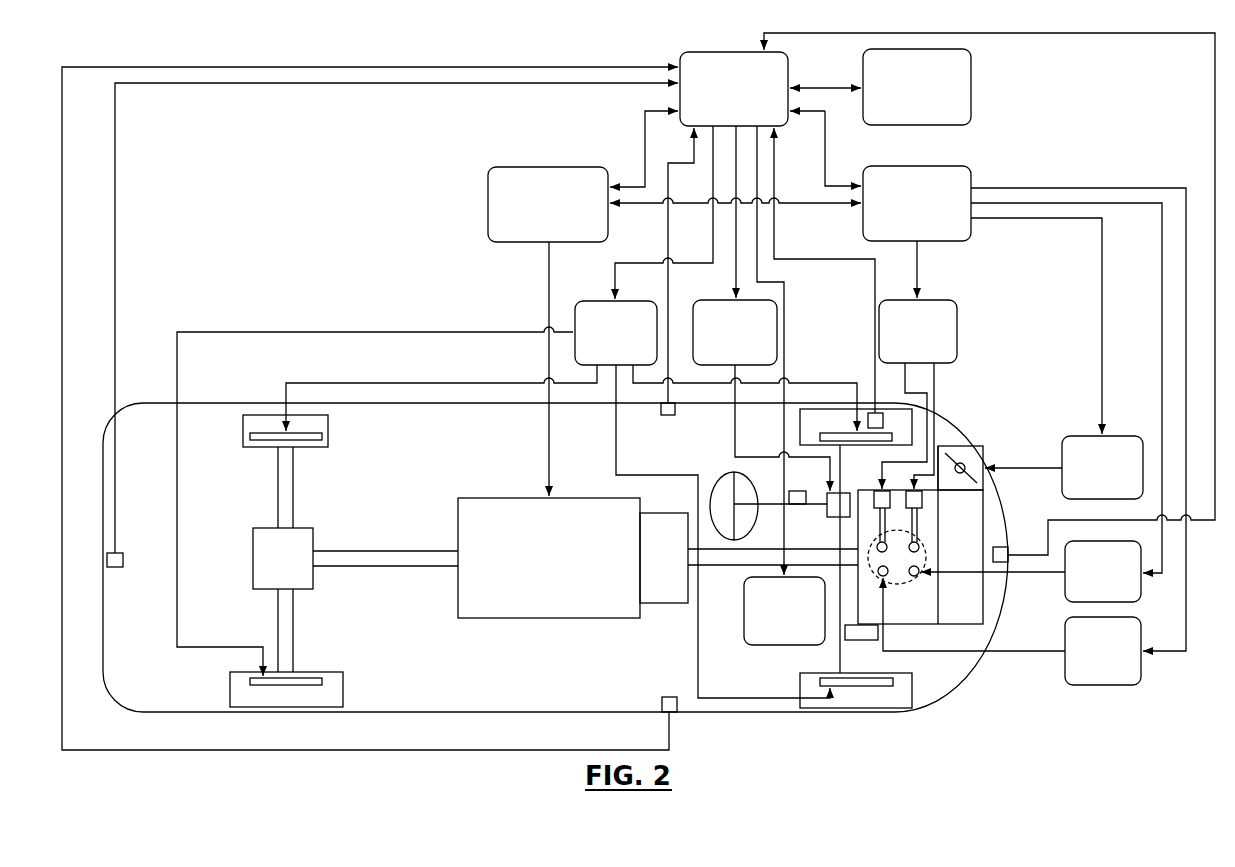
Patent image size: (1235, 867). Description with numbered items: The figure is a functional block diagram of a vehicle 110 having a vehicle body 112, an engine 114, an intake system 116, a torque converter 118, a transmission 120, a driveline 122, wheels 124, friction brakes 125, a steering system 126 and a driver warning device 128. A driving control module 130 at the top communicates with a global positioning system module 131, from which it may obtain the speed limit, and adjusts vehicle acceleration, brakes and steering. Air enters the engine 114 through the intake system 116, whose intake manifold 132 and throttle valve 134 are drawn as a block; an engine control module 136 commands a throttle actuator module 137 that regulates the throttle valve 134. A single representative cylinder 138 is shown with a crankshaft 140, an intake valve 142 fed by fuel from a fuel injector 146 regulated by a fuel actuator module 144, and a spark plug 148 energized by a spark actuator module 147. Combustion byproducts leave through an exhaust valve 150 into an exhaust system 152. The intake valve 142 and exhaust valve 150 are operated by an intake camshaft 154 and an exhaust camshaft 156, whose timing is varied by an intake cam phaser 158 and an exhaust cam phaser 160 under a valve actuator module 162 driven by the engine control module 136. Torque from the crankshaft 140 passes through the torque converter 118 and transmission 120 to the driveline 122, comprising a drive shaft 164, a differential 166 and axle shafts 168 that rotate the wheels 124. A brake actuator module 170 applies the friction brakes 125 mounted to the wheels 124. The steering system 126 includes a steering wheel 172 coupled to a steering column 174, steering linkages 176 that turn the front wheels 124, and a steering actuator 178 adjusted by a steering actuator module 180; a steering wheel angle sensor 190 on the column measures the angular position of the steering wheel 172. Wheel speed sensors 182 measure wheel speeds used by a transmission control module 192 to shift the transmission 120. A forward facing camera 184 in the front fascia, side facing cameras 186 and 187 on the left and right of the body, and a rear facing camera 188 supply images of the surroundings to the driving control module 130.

The vehicle 110 is at (60, 50).
The vehicle body 112 is at (218, 400).
The engine 114 is at (893, 626).
The intake system 116 is at (987, 457).
The torque converter 118 is at (663, 603).
The transmission 120 is at (552, 619).
The driveline 122 is at (407, 512).
The wheels 124 is at (243, 429).
The friction brakes 125 is at (268, 432).
The steering system 126 is at (720, 443).
The driver warning device 128 is at (743, 613).
The driving control module 130 is at (790, 62).
The global positioning system module 131 is at (975, 87).
The intake manifold 132 is at (983, 528).
The throttle valve 134 is at (960, 447).
The engine control module 136 is at (918, 165).
The throttle actuator module 137 is at (1080, 433).
The cylinder 138 is at (922, 545).
The crankshaft 140 is at (748, 567).
The intake valve 142 is at (887, 552).
The fuel actuator module 144 is at (1065, 588).
The fuel injector 146 is at (917, 575).
The spark actuator module 147 is at (1065, 663).
The spark plug 148 is at (887, 578).
The exhaust valve 150 is at (923, 553).
The exhaust system 152 is at (862, 641).
The intake camshaft 154 is at (878, 525).
The exhaust camshaft 156 is at (918, 523).
The intake cam phaser 158 is at (880, 497).
The exhaust cam phaser 160 is at (922, 500).
The valve actuator module 162 is at (942, 298).
The drive shaft 164 is at (387, 568).
The differential 166 is at (253, 558).
The axle shafts 168 is at (278, 488).
The brake actuator module 170 is at (602, 298).
The steering wheel 172 is at (722, 477).
The steering column 174 is at (782, 503).
The steering linkages 176 is at (841, 468).
The steering actuator 178 is at (827, 493).
The steering actuator module 180 is at (712, 298).
The wheel speed sensors 182 is at (870, 412).
The forward facing camera 184 is at (1000, 547).
The side facing camera 186 is at (666, 416).
The side facing camera 187 is at (662, 698).
The rear facing camera 188 is at (123, 553).
The steering wheel angle sensor 190 is at (797, 506).
The transmission control module 192 is at (548, 167).